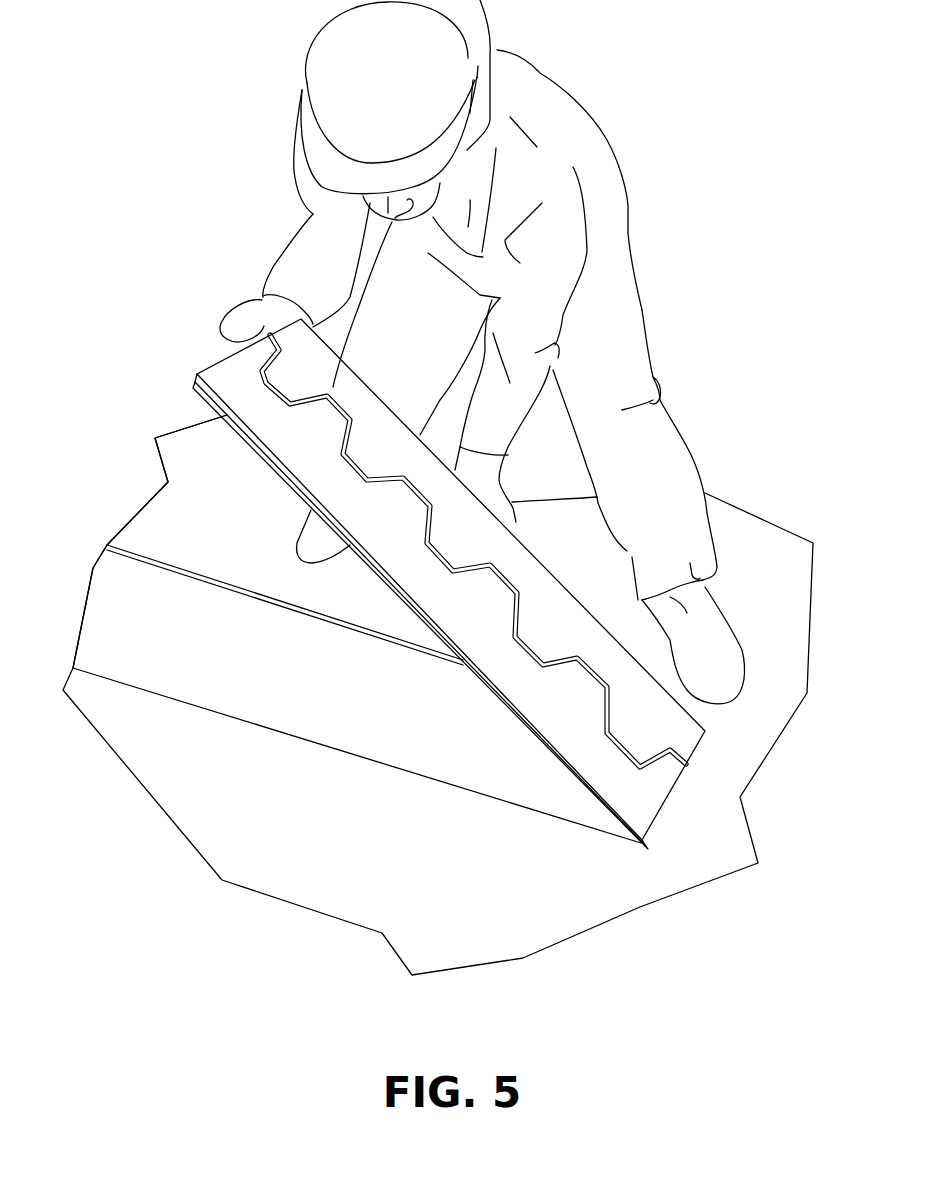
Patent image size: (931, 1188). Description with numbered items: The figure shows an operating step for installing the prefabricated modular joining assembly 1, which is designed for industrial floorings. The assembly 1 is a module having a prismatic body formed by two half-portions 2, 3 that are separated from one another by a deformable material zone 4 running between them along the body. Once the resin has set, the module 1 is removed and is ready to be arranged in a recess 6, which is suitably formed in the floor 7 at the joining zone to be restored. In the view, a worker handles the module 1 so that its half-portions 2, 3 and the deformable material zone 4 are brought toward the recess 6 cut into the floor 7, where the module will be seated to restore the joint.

The prefabricated modular joining assembly 1 is at (405, 560).
The half-portion 2 is at (380, 420).
The half-portion 3 is at (397, 550).
The deformable material zone 4 is at (518, 643).
The recess 6 is at (127, 607).
The floor 7 is at (242, 825).